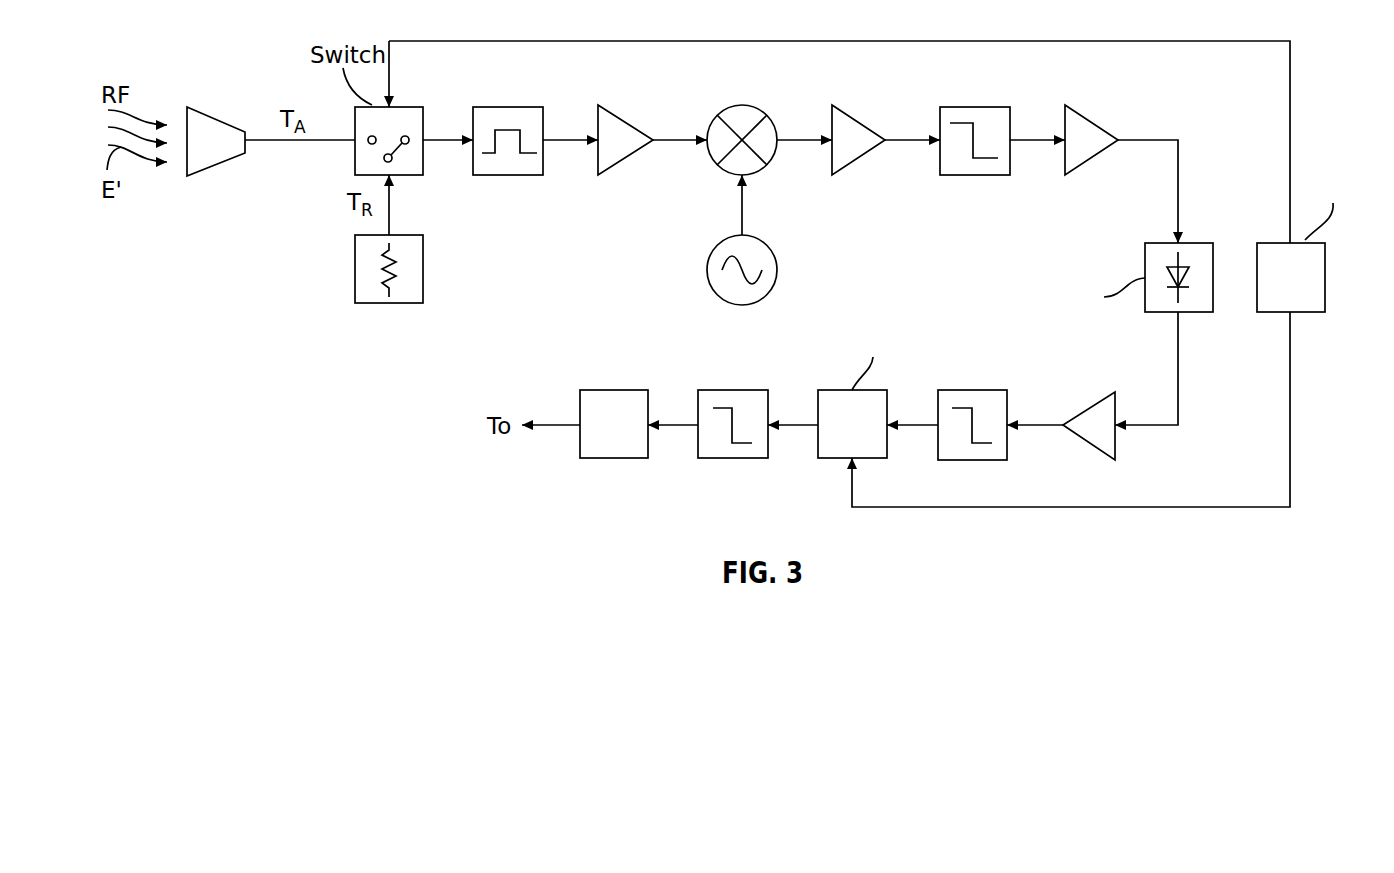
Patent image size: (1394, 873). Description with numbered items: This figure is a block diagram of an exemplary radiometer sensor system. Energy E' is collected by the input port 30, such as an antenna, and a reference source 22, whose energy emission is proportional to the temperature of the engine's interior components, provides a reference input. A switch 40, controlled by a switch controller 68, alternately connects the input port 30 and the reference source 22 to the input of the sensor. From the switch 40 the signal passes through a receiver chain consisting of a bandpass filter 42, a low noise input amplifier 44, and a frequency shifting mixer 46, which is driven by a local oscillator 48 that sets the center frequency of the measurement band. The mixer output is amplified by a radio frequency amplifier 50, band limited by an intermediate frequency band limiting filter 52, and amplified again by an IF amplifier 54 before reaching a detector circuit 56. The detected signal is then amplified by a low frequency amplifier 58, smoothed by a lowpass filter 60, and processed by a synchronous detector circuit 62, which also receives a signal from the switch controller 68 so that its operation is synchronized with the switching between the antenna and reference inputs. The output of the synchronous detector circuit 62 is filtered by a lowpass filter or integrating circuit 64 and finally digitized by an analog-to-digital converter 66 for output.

The input port 30 is at (217, 120).
The switch 40 is at (424, 153).
The reference source 22 is at (424, 270).
The bandpass filter 42 is at (532, 106).
The low noise input amplifier 44 is at (627, 124).
The frequency shifting mixer 46 is at (755, 108).
The local oscillator 48 is at (762, 243).
The radio frequency amplifier 50 is at (857, 123).
The intermediate frequency band limiting filter 52 is at (998, 106).
The IF amplifier 54 is at (1093, 123).
The detector circuit 56 is at (1198, 243).
The low frequency amplifier 58 is at (1088, 443).
The lowpass filter 60 is at (970, 460).
The synchronous detector circuit 62 is at (840, 458).
The lowpass filter or integrating circuit 64 is at (733, 458).
The analog-to-digital converter 66 is at (613, 458).
The switch controller 68 is at (1327, 276).